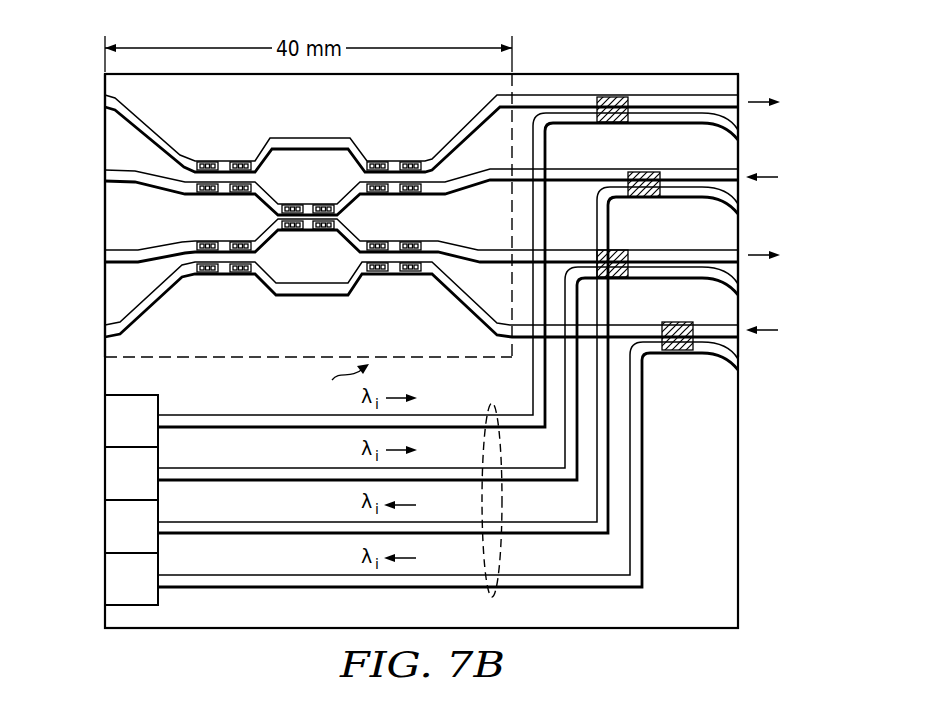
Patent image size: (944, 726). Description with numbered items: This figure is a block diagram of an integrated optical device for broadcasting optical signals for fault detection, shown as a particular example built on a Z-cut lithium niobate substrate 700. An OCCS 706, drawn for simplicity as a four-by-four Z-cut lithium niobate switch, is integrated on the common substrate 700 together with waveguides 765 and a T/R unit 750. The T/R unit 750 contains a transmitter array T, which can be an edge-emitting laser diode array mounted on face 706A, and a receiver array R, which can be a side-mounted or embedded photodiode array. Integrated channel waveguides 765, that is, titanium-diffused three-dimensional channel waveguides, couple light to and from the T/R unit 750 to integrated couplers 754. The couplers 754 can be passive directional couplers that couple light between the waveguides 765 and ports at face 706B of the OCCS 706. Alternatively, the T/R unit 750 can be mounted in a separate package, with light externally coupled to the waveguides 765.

The common substrate 700 is at (236, 630).
The OCCS 706 is at (368, 112).
The face 706A is at (105, 87).
The face 706B is at (740, 84).
The T/R unit 750 is at (160, 491).
The couplers 754 is at (612, 123).
The waveguides 765 is at (500, 547).